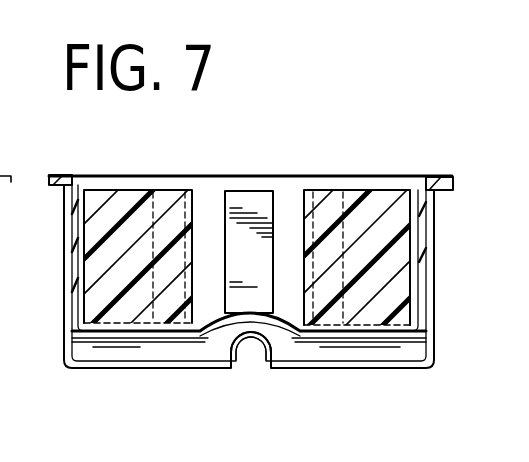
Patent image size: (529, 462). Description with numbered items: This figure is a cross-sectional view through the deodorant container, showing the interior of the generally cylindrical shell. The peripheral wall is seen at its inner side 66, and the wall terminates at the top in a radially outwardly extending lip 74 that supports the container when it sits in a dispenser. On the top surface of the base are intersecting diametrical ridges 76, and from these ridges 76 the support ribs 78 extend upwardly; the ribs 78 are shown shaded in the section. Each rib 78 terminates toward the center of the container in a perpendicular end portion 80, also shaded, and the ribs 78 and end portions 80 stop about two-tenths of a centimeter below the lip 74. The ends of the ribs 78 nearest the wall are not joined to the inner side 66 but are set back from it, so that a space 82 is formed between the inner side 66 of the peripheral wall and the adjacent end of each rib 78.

The inner side 66 is at (63, 269).
The lip 74 is at (435, 176).
The ridges 76 is at (231, 345).
The support ribs 78 is at (403, 284).
The end portion 80 is at (315, 333).
The space 82 is at (418, 313).